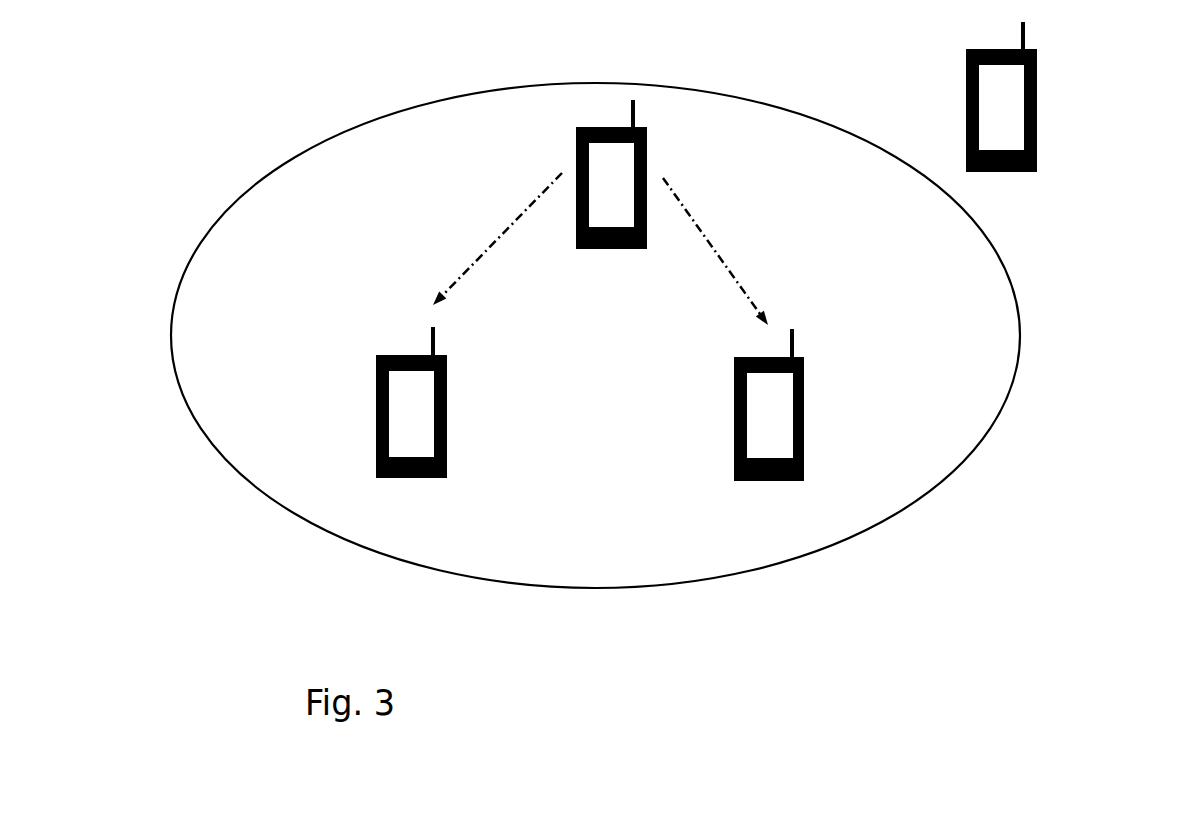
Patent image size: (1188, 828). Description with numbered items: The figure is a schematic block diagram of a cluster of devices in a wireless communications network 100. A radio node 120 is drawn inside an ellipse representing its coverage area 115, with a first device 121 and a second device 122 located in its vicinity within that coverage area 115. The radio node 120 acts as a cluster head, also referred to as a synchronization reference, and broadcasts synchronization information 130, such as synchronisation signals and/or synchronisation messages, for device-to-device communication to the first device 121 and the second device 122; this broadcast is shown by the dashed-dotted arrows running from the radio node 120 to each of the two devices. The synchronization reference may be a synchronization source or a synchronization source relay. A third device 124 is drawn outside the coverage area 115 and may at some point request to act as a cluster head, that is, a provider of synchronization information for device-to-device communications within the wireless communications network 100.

The wireless communications network 100 is at (986, 630).
The coverage area 115 is at (268, 500).
The radio node 120 is at (643, 160).
The first device 121 is at (376, 375).
The second device 122 is at (804, 389).
The third device 124 is at (1037, 88).
The synchronization information 130 is at (473, 265).